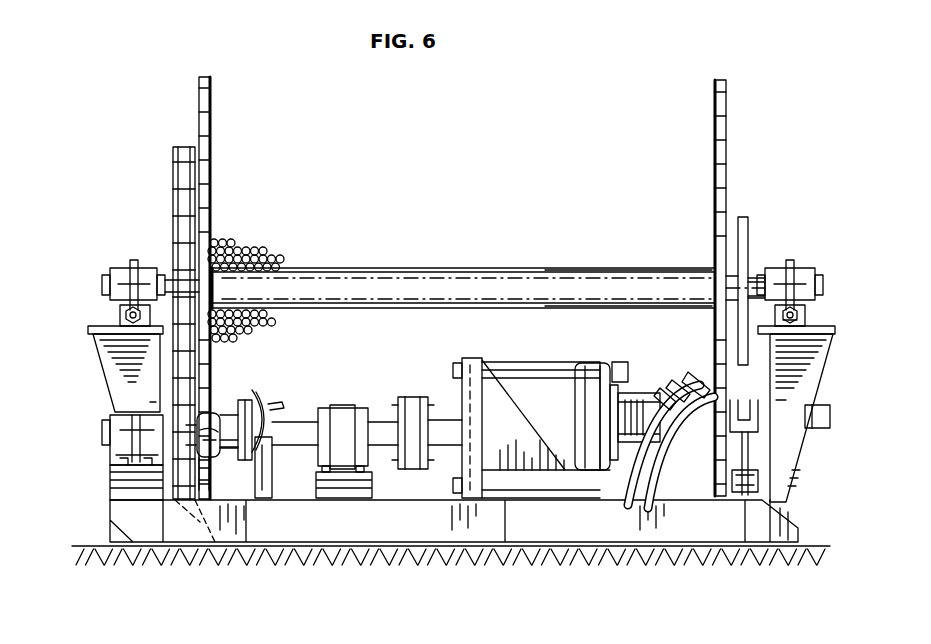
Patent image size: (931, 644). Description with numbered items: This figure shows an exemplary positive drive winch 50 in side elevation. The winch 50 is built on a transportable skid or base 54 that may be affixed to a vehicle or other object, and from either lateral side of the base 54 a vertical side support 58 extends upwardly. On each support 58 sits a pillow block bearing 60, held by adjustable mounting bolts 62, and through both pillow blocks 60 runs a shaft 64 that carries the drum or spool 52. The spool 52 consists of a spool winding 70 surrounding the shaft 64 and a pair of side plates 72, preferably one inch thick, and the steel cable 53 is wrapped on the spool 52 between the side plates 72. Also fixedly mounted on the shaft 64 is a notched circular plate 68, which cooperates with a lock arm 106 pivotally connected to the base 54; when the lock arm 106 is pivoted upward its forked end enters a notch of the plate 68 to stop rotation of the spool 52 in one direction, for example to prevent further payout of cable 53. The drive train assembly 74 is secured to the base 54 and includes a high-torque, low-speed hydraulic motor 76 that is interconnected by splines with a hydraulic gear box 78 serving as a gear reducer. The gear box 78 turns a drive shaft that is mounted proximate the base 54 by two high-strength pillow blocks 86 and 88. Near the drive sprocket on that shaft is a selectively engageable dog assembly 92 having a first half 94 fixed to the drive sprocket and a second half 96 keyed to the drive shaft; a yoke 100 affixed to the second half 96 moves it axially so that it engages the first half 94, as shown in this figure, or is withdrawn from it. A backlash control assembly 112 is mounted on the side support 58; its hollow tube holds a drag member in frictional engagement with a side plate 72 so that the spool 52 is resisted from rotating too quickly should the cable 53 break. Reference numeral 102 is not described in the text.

The positive drive winch 50 is at (734, 108).
The drum or spool 52 is at (433, 275).
The steel cable 53 is at (250, 240).
The transportable skid or base 54 is at (505, 536).
The vertical side support 58 is at (108, 367).
The pillow block bearing 60 is at (120, 270).
The adjustable mounting bolt 62 is at (800, 318).
The shaft 64 is at (752, 282).
The notched circular plate 68 is at (748, 222).
The spool winding 70 is at (553, 270).
The side plate 72 is at (209, 98).
The drive train assembly 74 is at (505, 352).
The hydraulic motor 76 is at (645, 395).
The hydraulic gear box 78 is at (555, 372).
The pillow block 86 is at (352, 410).
The pillow block 88 is at (118, 452).
The dog assembly 92 is at (230, 398).
The first half 94 is at (212, 413).
The second half 96 is at (232, 450).
The yoke 100 is at (266, 403).
The inner plate 102 is at (175, 222).
The lock arm 106 is at (743, 452).
The backlash control assembly 112 is at (827, 403).